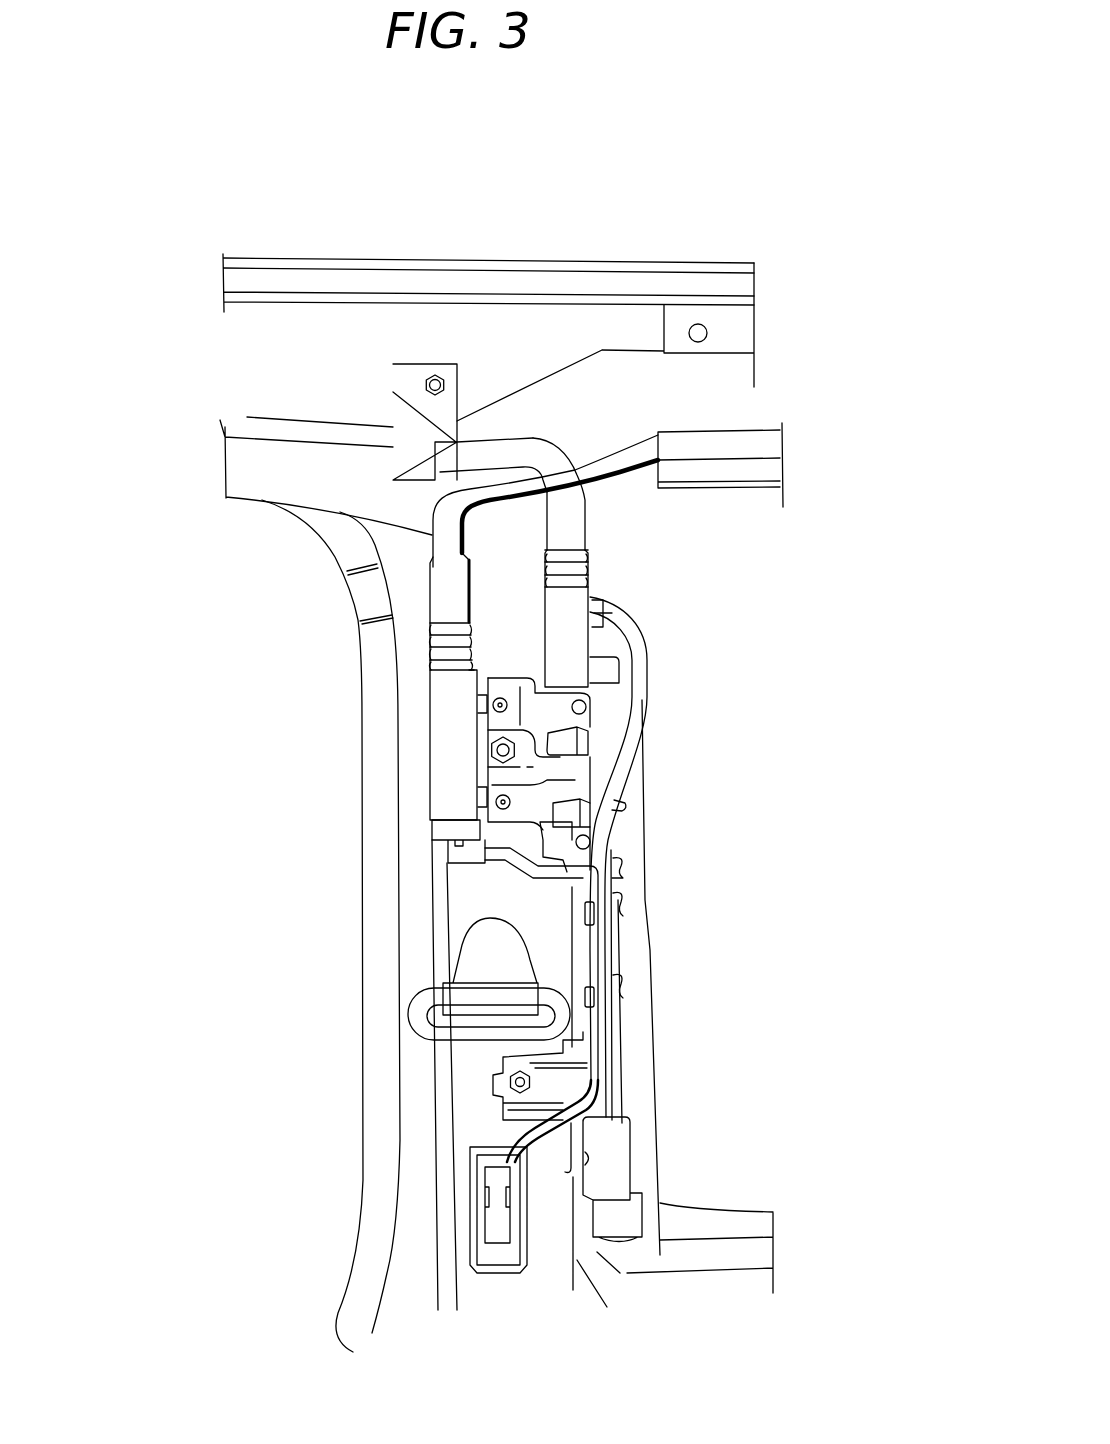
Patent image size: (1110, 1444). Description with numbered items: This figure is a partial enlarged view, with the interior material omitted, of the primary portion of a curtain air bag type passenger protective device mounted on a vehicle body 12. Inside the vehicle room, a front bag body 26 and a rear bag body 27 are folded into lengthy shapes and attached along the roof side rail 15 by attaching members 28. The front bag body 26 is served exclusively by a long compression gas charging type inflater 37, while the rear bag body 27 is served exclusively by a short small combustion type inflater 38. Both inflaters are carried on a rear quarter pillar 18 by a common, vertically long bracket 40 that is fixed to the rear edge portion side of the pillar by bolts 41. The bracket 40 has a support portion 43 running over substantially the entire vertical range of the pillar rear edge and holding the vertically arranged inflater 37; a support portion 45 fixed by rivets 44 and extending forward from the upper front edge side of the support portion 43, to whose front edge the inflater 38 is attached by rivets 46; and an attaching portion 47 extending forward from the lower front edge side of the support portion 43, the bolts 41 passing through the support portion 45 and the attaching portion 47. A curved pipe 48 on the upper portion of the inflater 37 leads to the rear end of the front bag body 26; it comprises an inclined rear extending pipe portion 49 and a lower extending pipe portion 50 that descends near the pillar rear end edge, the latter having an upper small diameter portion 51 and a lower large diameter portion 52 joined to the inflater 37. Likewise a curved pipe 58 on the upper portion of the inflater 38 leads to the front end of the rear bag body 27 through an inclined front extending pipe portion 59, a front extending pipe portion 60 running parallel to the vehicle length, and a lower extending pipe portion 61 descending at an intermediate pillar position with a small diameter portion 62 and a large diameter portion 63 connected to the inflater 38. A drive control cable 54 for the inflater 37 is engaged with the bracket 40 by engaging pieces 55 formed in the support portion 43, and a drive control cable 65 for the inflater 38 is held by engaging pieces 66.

The vehicle body 12 is at (715, 255).
The roof side rail 15 is at (356, 258).
The rear quarter pillar 18 is at (360, 920).
The front bag body 26 is at (255, 468).
The rear bag body 27 is at (733, 472).
The attaching member 28 is at (412, 382).
The inflater 37 is at (600, 636).
The inflater 38 is at (453, 738).
The bracket 40 is at (656, 967).
The bolt 41 is at (487, 750).
The support portion 43 is at (637, 1058).
The rivet 44 is at (587, 707).
The support portion 45 is at (575, 787).
The rivet 46 is at (492, 705).
The attaching portion 47 is at (503, 1097).
The pipe 48 is at (529, 431).
The inclined rear extending pipe portion 49 is at (484, 493).
The lower extending pipe portion 50 is at (577, 528).
The small diameter portion 51 is at (547, 490).
The large diameter portion 52 is at (583, 543).
The cable 54 is at (622, 762).
The engaging piece 55 is at (618, 905).
The pipe 58 is at (418, 594).
The inclined front extending pipe portion 59 is at (606, 468).
The front extending pipe portion 60 is at (435, 442).
The lower extending pipe portion 61 is at (447, 520).
The small diameter portion 62 is at (426, 534).
The large diameter portion 63 is at (440, 617).
The cable 65 is at (600, 1100).
The engaging piece 66 is at (583, 908).